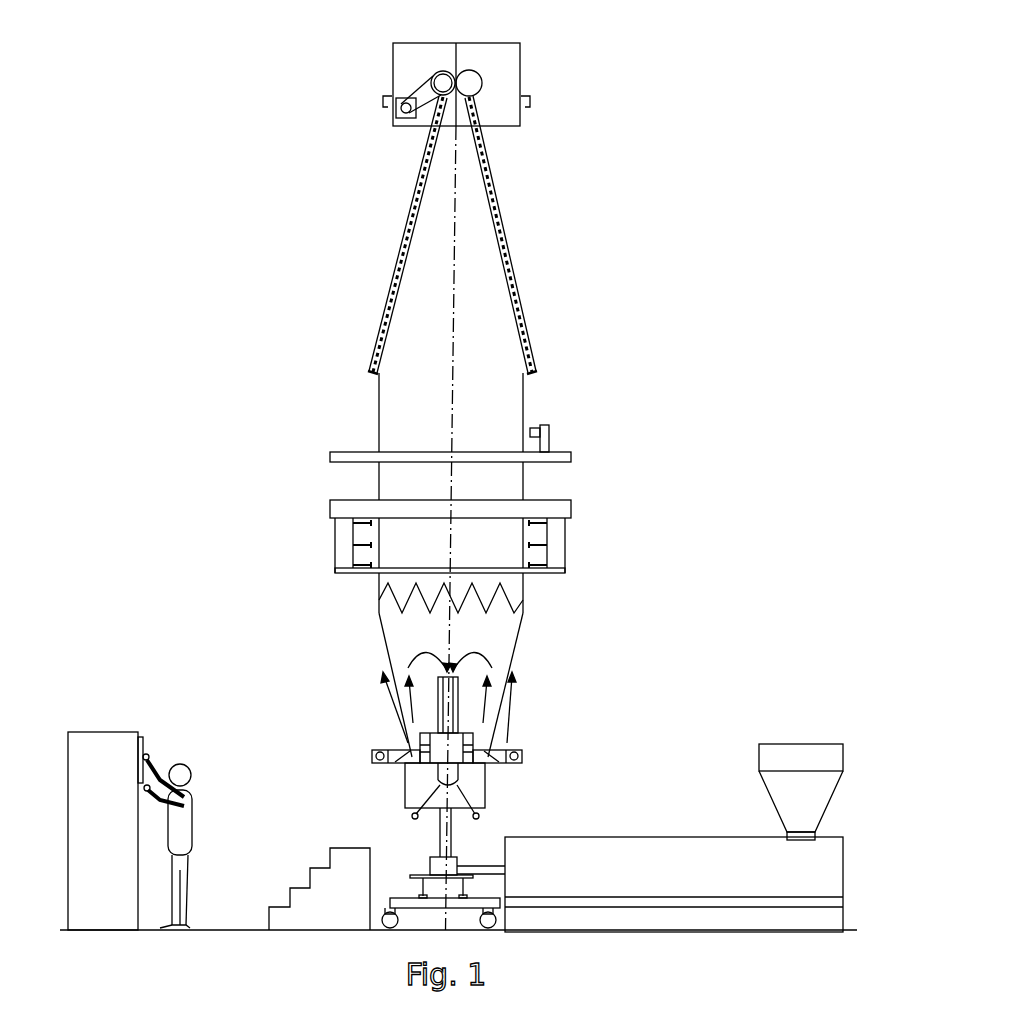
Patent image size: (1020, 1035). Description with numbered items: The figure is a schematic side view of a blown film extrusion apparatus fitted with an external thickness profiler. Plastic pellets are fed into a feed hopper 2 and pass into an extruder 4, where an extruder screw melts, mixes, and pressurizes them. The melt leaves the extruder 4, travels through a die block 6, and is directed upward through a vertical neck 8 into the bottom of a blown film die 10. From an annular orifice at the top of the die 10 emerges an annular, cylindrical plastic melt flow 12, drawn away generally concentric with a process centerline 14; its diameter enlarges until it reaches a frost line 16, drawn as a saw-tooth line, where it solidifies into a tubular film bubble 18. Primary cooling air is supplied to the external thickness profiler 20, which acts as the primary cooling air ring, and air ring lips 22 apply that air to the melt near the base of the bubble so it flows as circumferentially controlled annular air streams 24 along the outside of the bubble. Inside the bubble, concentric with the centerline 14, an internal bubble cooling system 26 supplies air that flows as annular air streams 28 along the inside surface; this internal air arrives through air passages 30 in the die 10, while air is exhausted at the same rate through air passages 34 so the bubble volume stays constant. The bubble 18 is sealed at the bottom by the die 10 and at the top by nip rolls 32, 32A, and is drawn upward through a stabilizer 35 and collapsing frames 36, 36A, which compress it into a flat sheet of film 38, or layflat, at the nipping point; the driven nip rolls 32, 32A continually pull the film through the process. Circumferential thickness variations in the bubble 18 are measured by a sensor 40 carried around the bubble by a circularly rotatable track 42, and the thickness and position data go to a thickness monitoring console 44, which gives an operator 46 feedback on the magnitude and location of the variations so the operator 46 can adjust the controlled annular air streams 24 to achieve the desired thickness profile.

The feed hopper 2 is at (782, 766).
The extruder 4 is at (674, 857).
The die block 6 is at (414, 875).
The vertical neck 8 is at (351, 832).
The blown film die 10 is at (528, 780).
The annular cylindrical plastic melt flow 12 is at (384, 772).
The process centerline 14 is at (550, 528).
The frost line 16 is at (387, 598).
The tubular film bubble 18 is at (387, 493).
The external thickness profiler 20 is at (536, 736).
The air ring lips 22 is at (545, 706).
The circumferentially controlled annular air streams 24 is at (550, 685).
The internal bubble cooling (IBC) system 26 is at (332, 712).
The annular air streams 28 is at (349, 695).
The air passages 30 is at (364, 796).
The nip roll 32 is at (364, 48).
The nip roll 32A is at (559, 68).
The air passages 34 is at (532, 802).
The stabilizer 35 is at (492, 536).
The collapsing frame 36 is at (359, 235).
The collapsing frame 36A is at (563, 235).
The flat sheet of film (layflat) 38 is at (433, 70).
The sensor 40 is at (592, 433).
The circularly rotatable track 42 is at (492, 479).
The thickness monitoring console 44 is at (128, 775).
The operator 46 is at (206, 829).